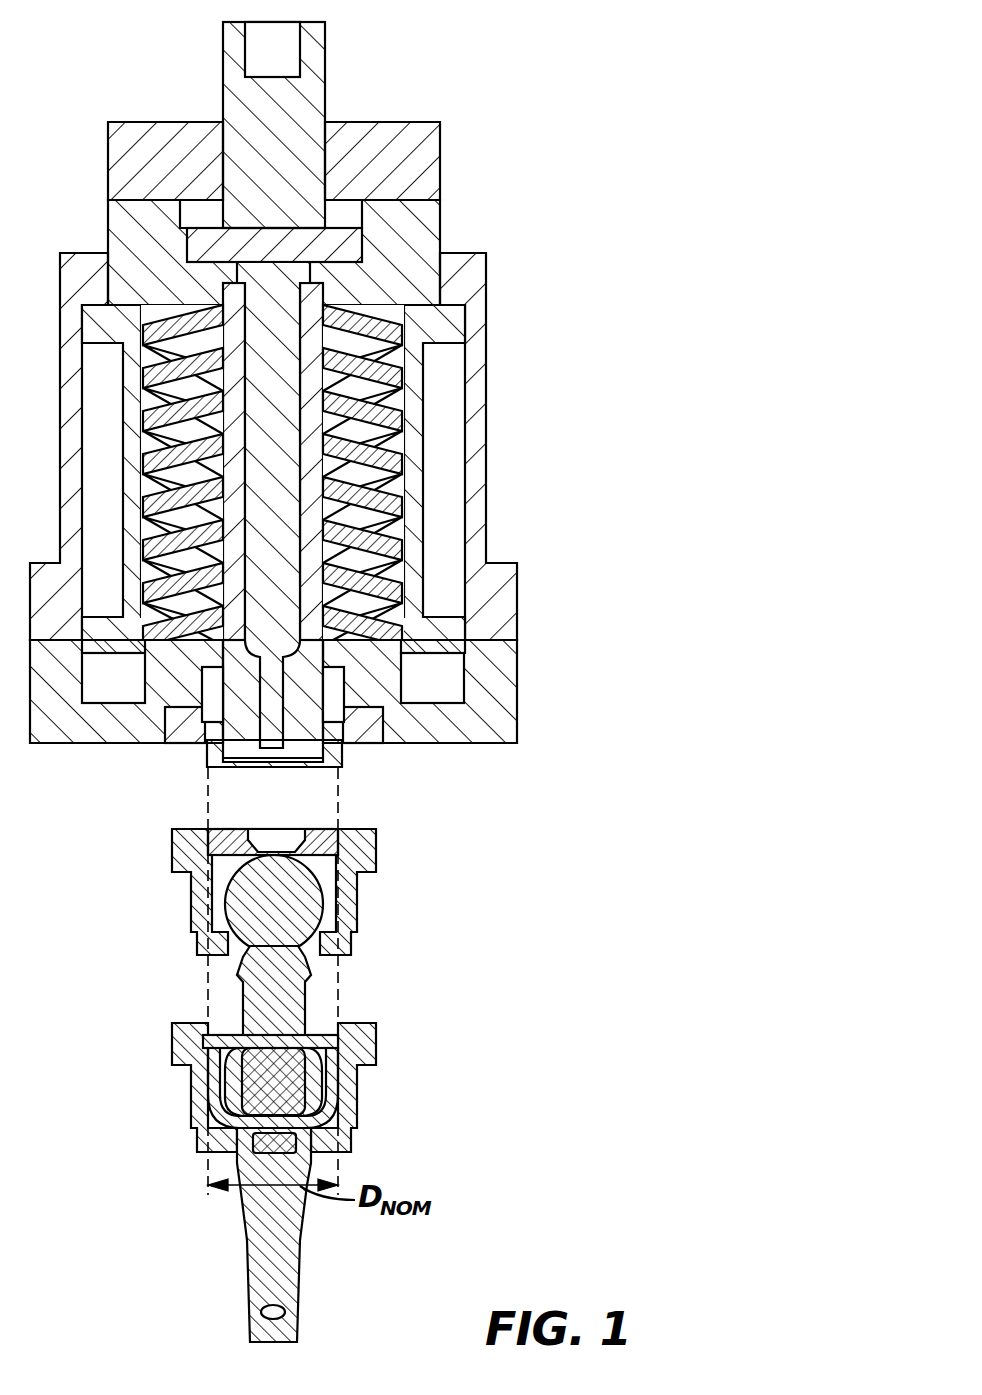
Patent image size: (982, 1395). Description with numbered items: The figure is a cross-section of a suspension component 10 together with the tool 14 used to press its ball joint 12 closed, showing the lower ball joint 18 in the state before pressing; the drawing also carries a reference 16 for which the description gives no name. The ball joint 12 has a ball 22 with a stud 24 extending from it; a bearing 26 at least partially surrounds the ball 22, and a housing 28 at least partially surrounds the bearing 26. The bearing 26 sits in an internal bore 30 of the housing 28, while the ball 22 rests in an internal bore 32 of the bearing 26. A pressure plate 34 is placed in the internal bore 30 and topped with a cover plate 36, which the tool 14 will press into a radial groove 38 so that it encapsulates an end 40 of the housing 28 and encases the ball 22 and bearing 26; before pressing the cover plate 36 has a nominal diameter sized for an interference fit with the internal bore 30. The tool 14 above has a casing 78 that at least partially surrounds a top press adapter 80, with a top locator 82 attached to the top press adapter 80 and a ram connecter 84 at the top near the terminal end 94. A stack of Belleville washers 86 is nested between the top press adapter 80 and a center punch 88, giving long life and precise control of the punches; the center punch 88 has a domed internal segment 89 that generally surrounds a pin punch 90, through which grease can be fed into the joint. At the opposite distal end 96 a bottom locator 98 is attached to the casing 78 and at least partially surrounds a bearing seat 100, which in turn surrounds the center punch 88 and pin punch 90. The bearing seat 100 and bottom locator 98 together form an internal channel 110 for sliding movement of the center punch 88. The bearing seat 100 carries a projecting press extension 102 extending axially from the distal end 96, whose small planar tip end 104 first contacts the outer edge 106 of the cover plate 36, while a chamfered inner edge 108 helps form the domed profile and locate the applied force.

The suspension component 10 is at (503, 912).
The ball joint 12 is at (376, 869).
The tool 14 is at (560, 326).
The valve body lower portion 16 is at (363, 912).
The lower ball joint 18 is at (360, 1090).
The ball 22 is at (236, 916).
The stud 24 is at (237, 978).
The bearing 26 is at (214, 889).
The housing 28 is at (200, 845).
The internal bore 30 is at (328, 892).
The internal bore 32 is at (232, 864).
The pressure plate 34 is at (372, 846).
The cover plate 36 is at (307, 840).
The radial groove 38 is at (214, 836).
The end 40 is at (380, 830).
The casing 78 is at (480, 268).
The top press adapter 80 is at (438, 215).
The top locator 82 is at (442, 145).
The ram connecter 84 is at (270, 115).
The stack of Belleville washers 86 is at (385, 412).
The center punch 88 is at (200, 672).
The domed internal segment 89 is at (394, 727).
The pin punch 90 is at (280, 688).
The terminal end 94 is at (232, 22).
The distal end 96 is at (310, 715).
The bottom locator 98 is at (518, 657).
The bearing seat 100 is at (375, 725).
The projecting press extension 102 is at (342, 752).
The planar tip end 104 is at (221, 776).
The outer edge 106 is at (335, 830).
The chamfered inner edge 108 is at (226, 764).
The internal channel 110 is at (340, 708).